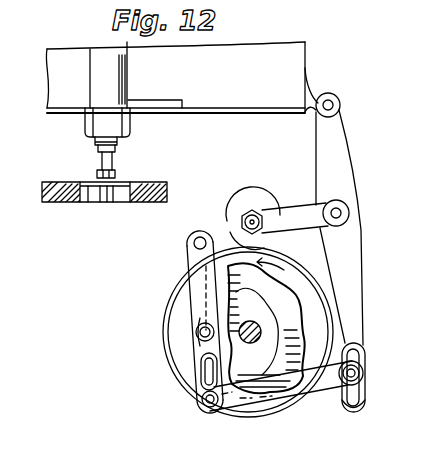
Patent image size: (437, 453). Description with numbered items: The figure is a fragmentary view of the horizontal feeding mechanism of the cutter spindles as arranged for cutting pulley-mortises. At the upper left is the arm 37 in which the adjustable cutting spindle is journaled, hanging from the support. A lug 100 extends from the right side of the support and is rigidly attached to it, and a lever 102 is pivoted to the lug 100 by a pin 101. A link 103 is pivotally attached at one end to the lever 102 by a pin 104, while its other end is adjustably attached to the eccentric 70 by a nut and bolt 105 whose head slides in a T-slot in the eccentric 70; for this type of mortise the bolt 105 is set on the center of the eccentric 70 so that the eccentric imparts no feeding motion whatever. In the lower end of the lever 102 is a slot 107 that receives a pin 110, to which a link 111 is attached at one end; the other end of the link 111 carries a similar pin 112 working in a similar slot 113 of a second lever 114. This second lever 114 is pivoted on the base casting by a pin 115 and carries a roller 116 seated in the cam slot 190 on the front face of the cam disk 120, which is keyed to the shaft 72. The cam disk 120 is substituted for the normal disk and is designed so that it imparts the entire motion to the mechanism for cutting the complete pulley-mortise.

The arm 37 is at (98, 118).
The eccentric 70 is at (259, 199).
The shaft 72 is at (250, 337).
The lug 100 is at (317, 80).
The pin 101 is at (341, 104).
The lever 102 is at (336, 137).
The link 103 is at (292, 209).
The pin 104 is at (346, 200).
The nut and bolt 105 is at (245, 215).
The slot 107 is at (358, 352).
The pin 110 is at (363, 371).
The link 111 is at (348, 407).
The pin 112 is at (203, 401).
The slot 113 is at (201, 367).
The second lever 114 is at (197, 263).
The pin 115 is at (192, 242).
The roller 116 is at (195, 328).
The cam disk 120 is at (297, 273).
The cam slot 190 is at (291, 308).